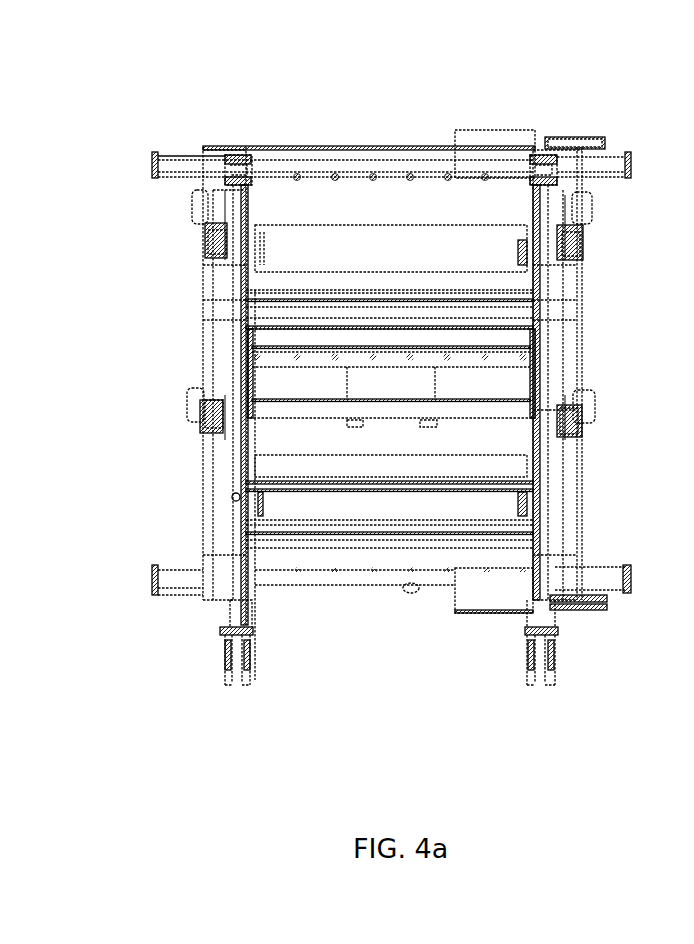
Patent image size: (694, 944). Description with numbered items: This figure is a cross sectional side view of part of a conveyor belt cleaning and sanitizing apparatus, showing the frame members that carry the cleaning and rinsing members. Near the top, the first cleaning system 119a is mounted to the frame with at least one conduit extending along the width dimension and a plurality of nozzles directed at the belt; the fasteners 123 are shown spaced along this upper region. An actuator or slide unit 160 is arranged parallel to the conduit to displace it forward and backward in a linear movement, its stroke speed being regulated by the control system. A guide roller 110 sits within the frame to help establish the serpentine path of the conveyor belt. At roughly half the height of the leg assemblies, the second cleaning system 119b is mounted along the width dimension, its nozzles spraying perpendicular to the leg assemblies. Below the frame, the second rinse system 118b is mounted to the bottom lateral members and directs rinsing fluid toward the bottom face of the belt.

The guide roller 110 is at (280, 248).
The second rinse system 118b is at (172, 578).
The first cleaning system 119a is at (185, 165).
The second cleaning system 119b is at (505, 362).
The fastening screws 123 is at (485, 174).
The actuator or slide unit 160 is at (487, 145).